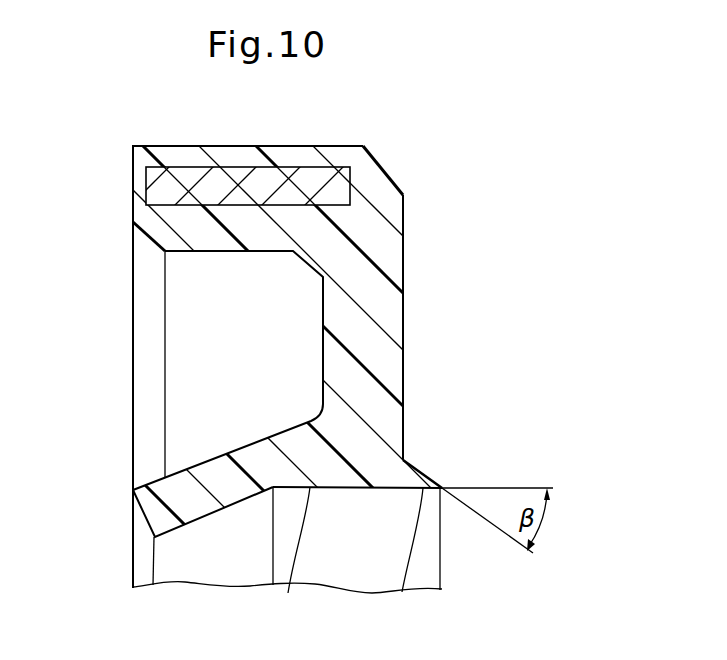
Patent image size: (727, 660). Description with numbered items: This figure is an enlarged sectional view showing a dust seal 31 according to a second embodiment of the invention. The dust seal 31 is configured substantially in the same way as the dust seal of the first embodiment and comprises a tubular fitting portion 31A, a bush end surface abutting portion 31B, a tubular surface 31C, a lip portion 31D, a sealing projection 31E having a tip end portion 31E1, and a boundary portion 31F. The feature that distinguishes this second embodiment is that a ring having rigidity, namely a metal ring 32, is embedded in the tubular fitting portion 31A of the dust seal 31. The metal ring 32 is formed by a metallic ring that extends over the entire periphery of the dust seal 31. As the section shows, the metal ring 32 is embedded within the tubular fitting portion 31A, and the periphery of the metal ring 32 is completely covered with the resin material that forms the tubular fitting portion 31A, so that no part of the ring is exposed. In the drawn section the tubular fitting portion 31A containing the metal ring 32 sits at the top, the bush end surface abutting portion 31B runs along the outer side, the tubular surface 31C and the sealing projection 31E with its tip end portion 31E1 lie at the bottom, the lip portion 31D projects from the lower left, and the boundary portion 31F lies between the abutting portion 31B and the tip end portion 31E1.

The dust seal 31 is at (385, 168).
The tubular fitting portion 31A is at (194, 157).
The bush end surface abutting portion 31B is at (367, 312).
The tubular surface 31C is at (282, 555).
The lip portion 31D is at (165, 485).
The sealing projection 31E is at (397, 560).
The tip end portion 31E1 is at (443, 487).
The boundary portion 31F is at (405, 456).
The metal ring 32 is at (177, 192).